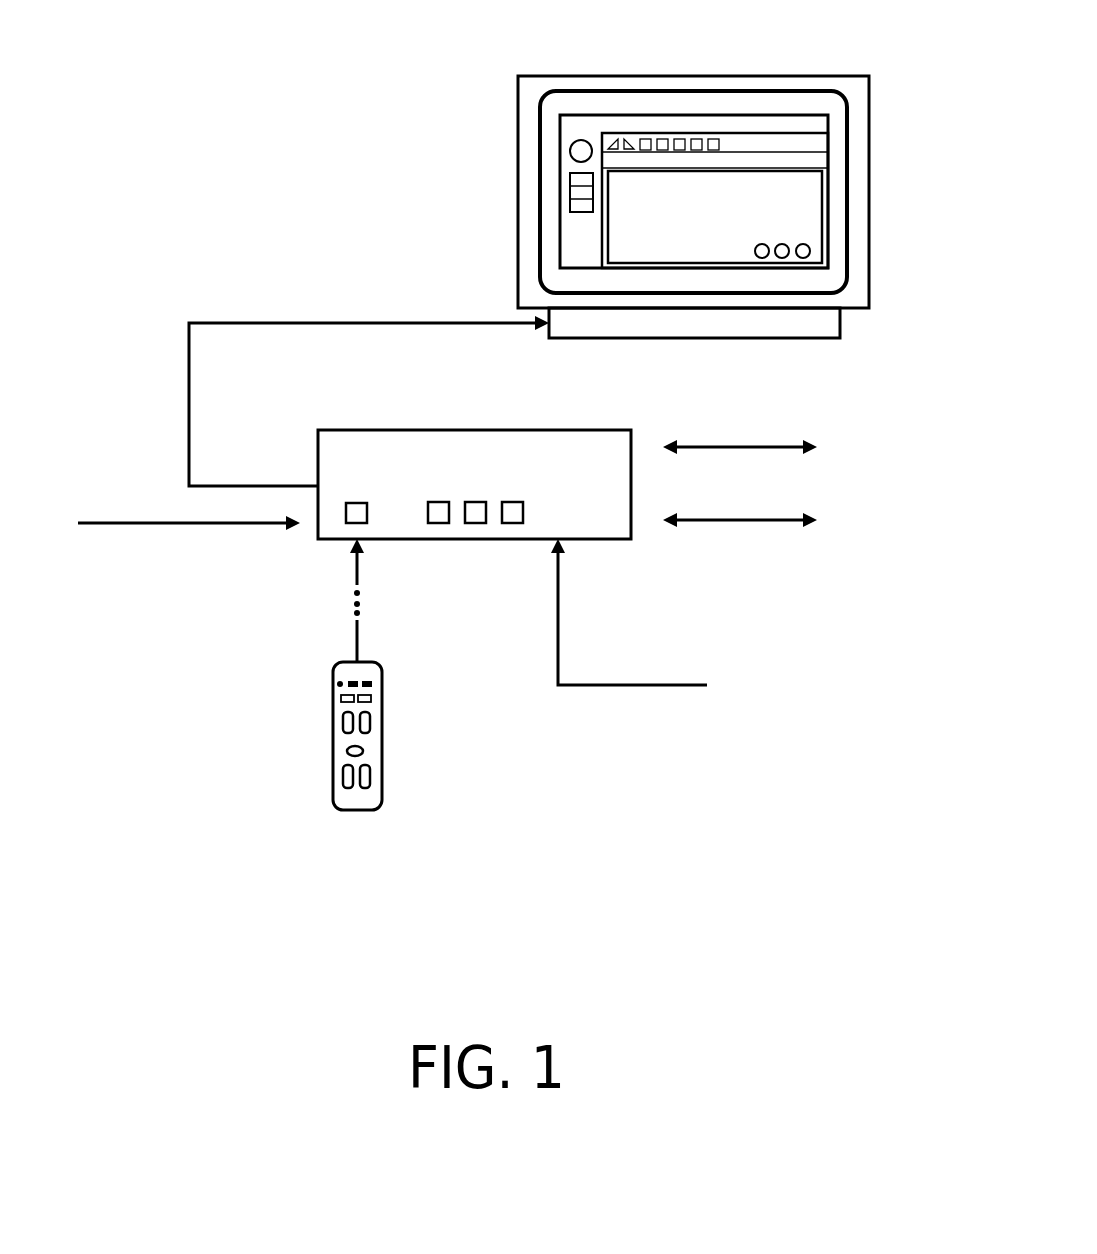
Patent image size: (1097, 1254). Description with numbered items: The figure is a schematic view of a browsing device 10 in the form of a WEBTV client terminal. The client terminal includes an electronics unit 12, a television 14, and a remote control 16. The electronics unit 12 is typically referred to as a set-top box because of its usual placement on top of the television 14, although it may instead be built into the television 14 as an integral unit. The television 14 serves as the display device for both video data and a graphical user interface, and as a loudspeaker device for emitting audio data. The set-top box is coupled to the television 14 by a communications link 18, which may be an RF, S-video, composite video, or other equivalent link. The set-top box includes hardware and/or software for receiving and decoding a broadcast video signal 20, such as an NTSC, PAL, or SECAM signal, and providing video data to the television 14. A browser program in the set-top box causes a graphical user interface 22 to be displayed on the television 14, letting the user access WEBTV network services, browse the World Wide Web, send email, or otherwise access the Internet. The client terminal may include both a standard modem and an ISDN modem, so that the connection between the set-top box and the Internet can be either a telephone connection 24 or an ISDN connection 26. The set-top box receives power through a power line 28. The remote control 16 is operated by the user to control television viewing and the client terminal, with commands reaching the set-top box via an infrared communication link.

The browsing device 10 is at (274, 230).
The electronics unit 12 is at (627, 535).
The television 14 is at (869, 190).
The remote control 16 is at (357, 798).
The communications link 18 is at (189, 408).
The broadcast video signal 20 is at (233, 523).
The graphical user interface 22 is at (738, 113).
The telephone connection 24 is at (773, 447).
The ISDN connection 26 is at (768, 520).
The power line 28 is at (670, 685).